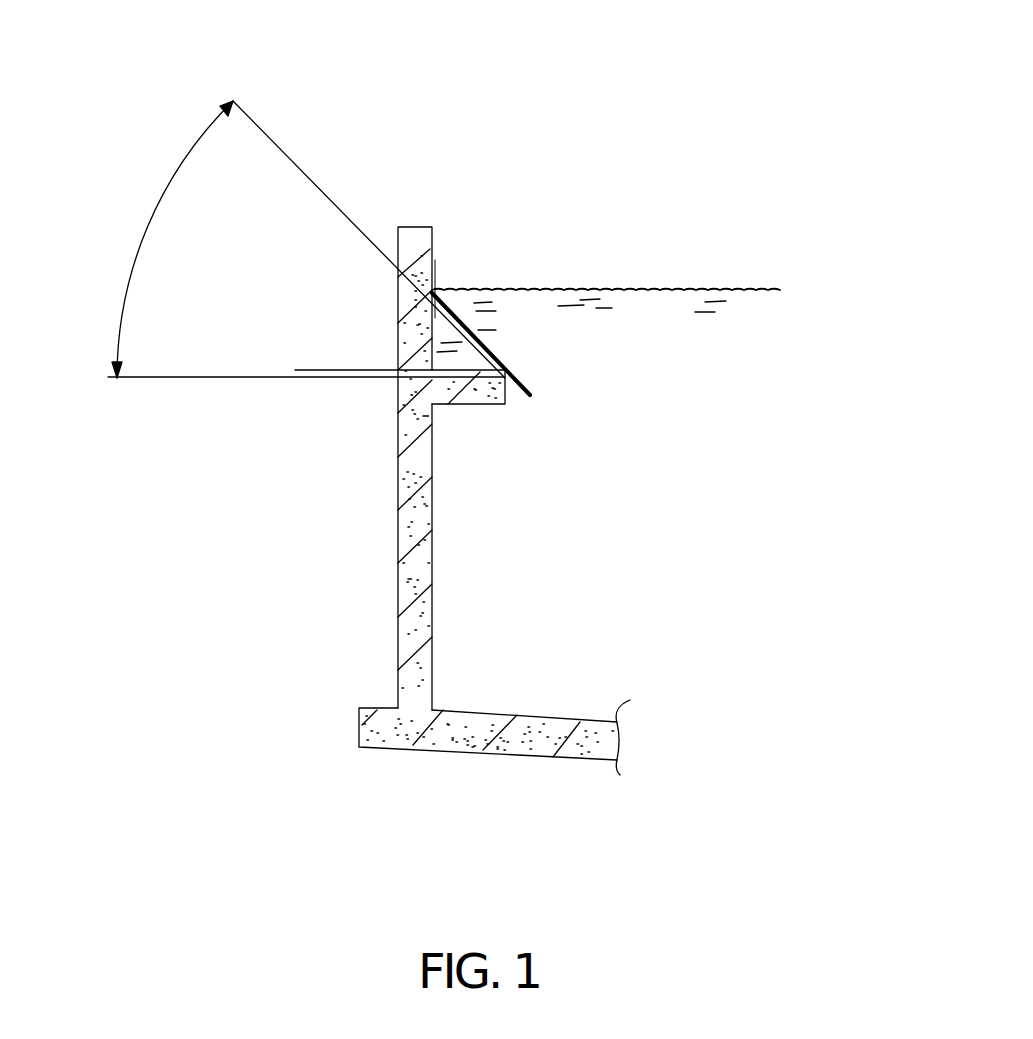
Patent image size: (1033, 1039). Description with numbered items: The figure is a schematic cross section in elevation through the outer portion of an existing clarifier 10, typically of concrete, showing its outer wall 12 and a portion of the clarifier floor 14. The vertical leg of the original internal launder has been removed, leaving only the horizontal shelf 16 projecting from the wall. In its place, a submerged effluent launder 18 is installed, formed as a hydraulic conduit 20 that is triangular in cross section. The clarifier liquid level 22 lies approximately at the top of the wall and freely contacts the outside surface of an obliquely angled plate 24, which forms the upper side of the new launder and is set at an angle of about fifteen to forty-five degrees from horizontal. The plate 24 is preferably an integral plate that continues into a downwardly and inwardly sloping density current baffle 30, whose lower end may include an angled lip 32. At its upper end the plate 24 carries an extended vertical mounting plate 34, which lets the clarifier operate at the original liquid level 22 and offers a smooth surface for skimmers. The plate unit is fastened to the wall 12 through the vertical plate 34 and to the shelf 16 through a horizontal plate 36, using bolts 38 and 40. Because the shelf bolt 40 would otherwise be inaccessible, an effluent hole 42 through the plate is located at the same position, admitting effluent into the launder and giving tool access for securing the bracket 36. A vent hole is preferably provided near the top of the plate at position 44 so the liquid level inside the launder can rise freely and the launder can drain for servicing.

The clarifier 10 is at (607, 90).
The outer wall 12 is at (398, 243).
The clarifier floor 14 is at (548, 740).
The horizontal shelf 16 is at (463, 407).
The submerged effluent launder 18 is at (555, 180).
The hydraulic conduit 20 is at (462, 357).
The liquid level 22 is at (720, 290).
The obliquely angled plate 24 is at (458, 325).
The density current baffle 30 is at (531, 396).
The angled lip 32 is at (530, 397).
The vertical mounting plate 34 is at (434, 295).
The horizontal plate 36 is at (507, 380).
The bolt 38 is at (431, 293).
The shelf bolt 40 is at (507, 377).
The effluent hole 42 is at (505, 404).
The vent hole position 44 is at (438, 292).